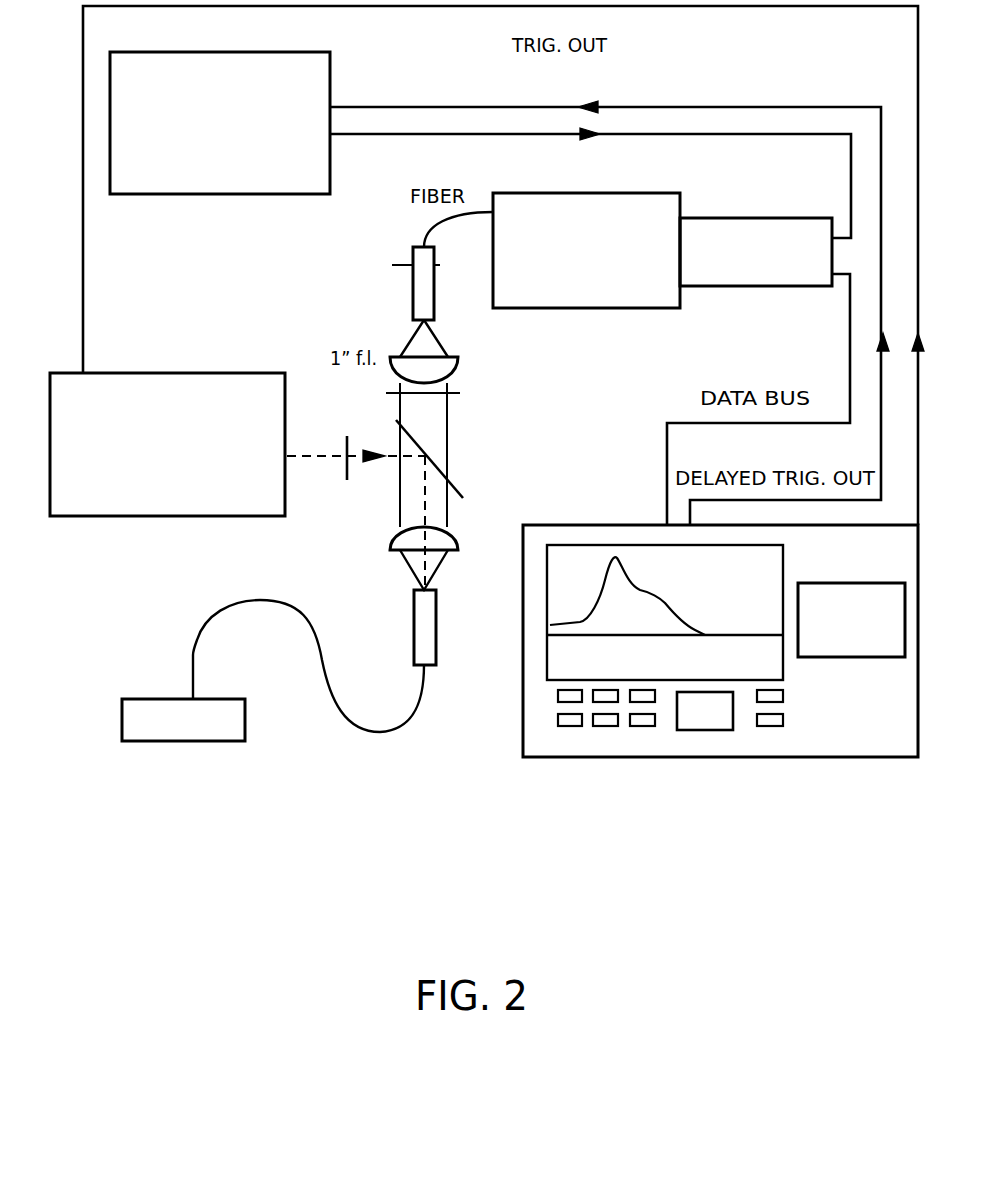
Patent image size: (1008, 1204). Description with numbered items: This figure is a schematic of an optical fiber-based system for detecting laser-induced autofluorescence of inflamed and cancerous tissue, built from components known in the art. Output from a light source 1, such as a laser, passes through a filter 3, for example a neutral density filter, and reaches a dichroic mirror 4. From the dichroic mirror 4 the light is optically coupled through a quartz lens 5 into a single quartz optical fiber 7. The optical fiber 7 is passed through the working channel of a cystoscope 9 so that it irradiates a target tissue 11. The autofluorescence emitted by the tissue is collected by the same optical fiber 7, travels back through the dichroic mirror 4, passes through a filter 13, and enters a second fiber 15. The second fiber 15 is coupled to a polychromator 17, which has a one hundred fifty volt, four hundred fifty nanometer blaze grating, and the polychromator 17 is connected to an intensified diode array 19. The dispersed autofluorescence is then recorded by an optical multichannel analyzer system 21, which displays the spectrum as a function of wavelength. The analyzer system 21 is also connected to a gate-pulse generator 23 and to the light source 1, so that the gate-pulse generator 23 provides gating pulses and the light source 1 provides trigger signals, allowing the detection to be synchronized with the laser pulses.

The light source 1 is at (63, 373).
The filter 3 is at (347, 472).
The dichroic mirror 4 is at (463, 482).
The quartz lens 5 is at (458, 540).
The optical fiber 7 is at (425, 690).
The cystoscope 9 is at (436, 618).
The target tissue 11 is at (193, 655).
The filter 13 is at (452, 394).
The second fiber 15 is at (430, 235).
The polychromator 17 is at (608, 193).
The intensified diode array 19 is at (752, 218).
The optical multichannel analyzer system 21 is at (523, 719).
The gate-pulse generator 23 is at (110, 107).